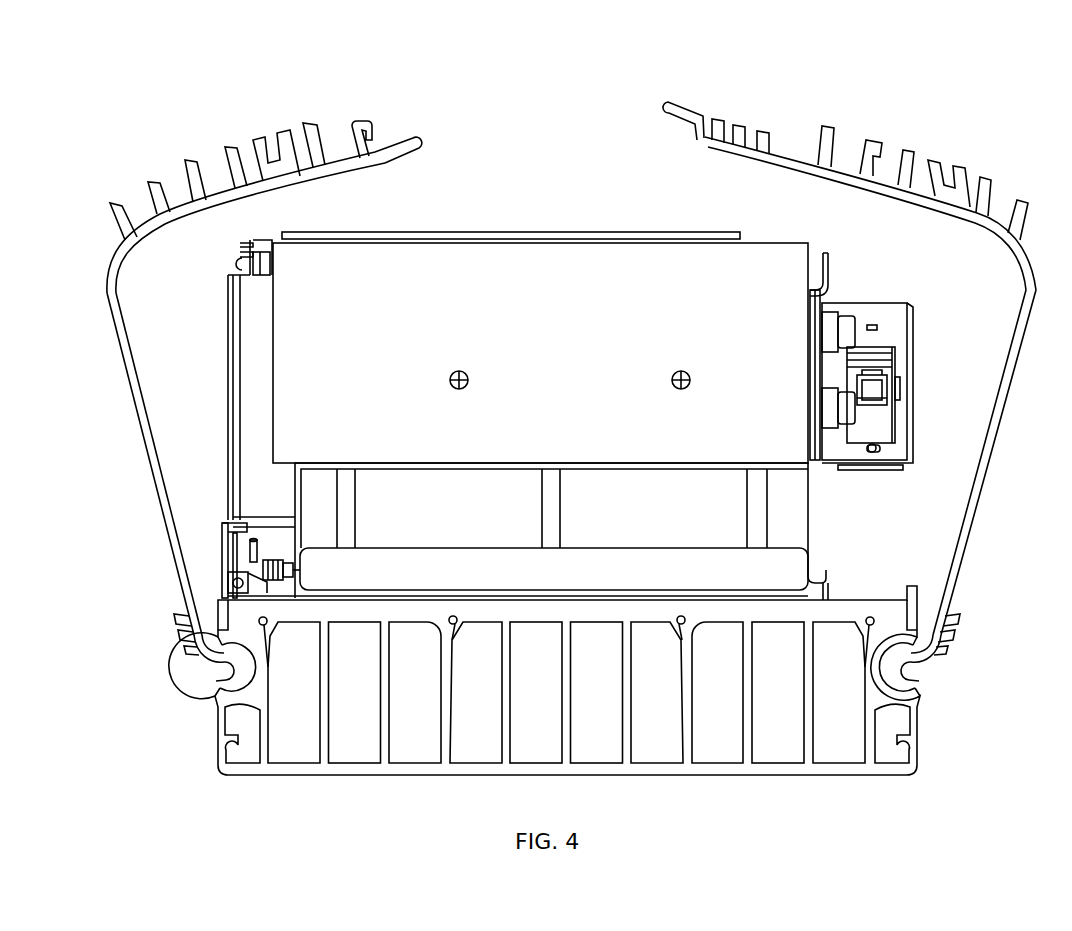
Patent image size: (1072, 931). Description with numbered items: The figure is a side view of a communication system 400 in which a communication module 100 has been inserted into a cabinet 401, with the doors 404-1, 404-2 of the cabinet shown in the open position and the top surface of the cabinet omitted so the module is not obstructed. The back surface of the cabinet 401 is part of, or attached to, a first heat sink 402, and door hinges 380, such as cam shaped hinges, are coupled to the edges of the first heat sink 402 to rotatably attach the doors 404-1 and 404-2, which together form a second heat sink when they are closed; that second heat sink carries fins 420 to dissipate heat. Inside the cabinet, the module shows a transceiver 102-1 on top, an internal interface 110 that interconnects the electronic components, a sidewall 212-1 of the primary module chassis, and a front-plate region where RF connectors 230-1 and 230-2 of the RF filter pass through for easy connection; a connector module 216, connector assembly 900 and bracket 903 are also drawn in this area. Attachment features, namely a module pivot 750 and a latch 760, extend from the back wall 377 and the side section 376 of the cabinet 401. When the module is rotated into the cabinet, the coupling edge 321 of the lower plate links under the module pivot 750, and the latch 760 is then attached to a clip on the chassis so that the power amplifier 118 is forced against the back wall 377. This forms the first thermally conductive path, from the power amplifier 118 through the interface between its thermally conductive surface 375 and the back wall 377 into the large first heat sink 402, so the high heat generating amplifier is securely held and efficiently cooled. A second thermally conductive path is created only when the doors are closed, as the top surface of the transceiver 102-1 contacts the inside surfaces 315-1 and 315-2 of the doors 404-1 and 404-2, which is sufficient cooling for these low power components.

The communication module 100 is at (168, 318).
The communication system 400 is at (977, 130).
The fins 420 is at (149, 182).
The door 404-1 is at (228, 147).
The door 404-2 is at (908, 150).
The inside surface 315-1 is at (350, 172).
The inside surface 315-2 is at (776, 172).
The transceiver 102-1 is at (521, 232).
The connector module 216 is at (877, 305).
The connector assembly 900 is at (912, 370).
The mounting bracket 903 is at (227, 290).
The RF connector 230-1 is at (823, 330).
The RF connector 230-2 is at (823, 405).
The sidewall 212-1 is at (241, 422).
The internal interface 110 is at (242, 448).
The cabinet 401 is at (997, 432).
The power amplifier 118 is at (724, 533).
The thermally conductive surface 375 is at (490, 596).
The side section 376 is at (226, 555).
The latch 760 is at (230, 587).
The module pivot 750 is at (812, 575).
The back wall 377 is at (882, 597).
The coupling edge 321 is at (812, 588).
The door hinges 380 is at (224, 674).
The first heat sink 402 is at (800, 762).